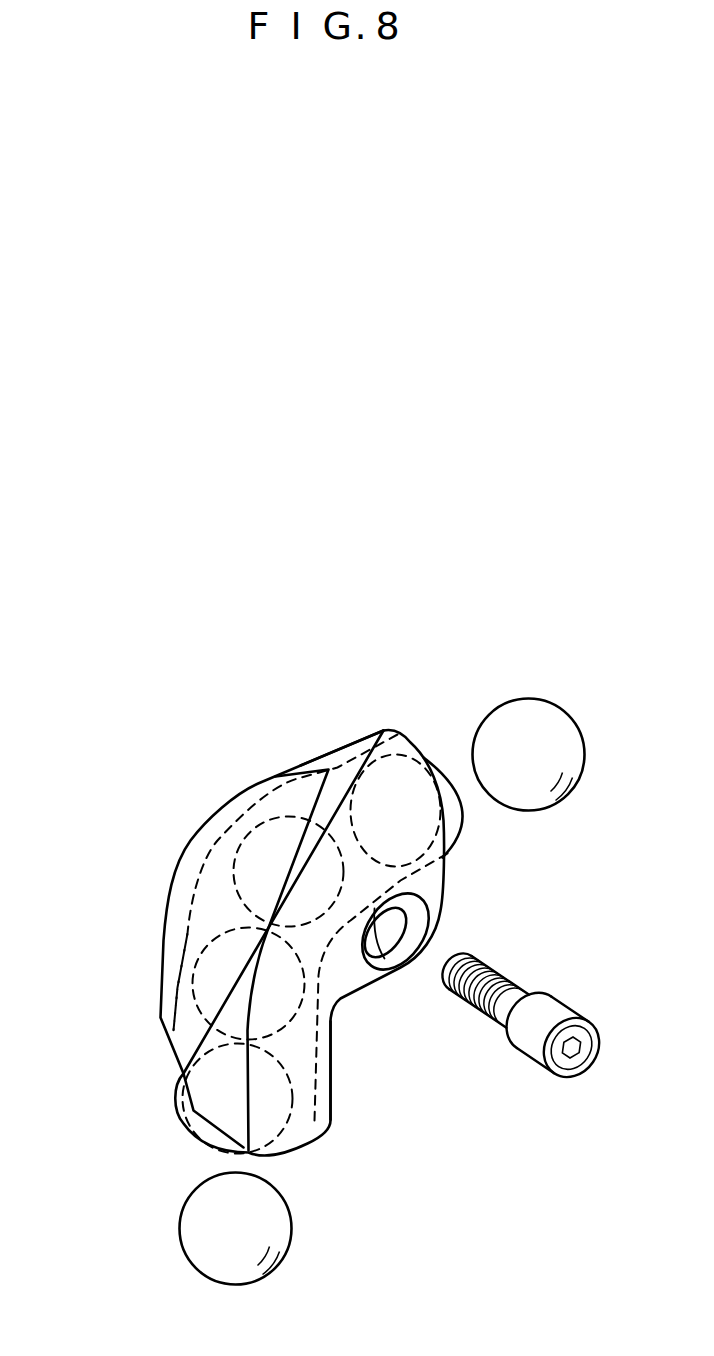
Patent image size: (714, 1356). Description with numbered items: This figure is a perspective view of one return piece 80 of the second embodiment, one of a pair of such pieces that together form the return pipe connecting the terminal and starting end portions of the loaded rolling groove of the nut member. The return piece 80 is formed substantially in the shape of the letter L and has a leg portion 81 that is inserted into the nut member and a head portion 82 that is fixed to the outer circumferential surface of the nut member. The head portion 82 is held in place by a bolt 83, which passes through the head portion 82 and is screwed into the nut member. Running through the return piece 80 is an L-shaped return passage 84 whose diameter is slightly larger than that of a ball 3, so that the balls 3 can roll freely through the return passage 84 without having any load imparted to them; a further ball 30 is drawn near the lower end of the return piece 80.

The ball 3 is at (529, 698).
The ball 30 is at (180, 1228).
The return piece 80 is at (163, 820).
The leg portion 81 is at (330, 1102).
The head portion 82 is at (328, 754).
The bolt 83 is at (556, 1012).
The return passage 84 is at (185, 920).